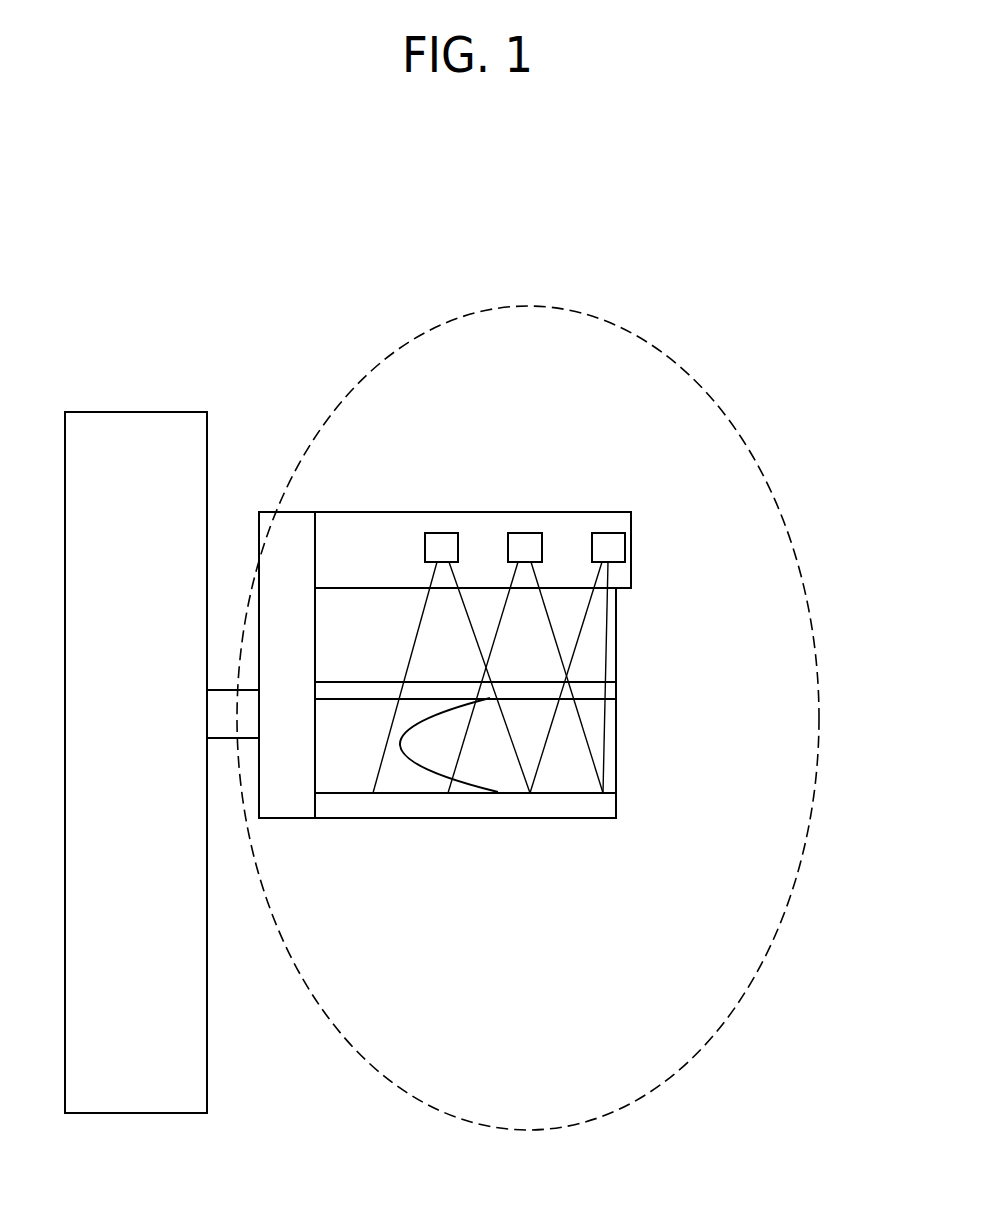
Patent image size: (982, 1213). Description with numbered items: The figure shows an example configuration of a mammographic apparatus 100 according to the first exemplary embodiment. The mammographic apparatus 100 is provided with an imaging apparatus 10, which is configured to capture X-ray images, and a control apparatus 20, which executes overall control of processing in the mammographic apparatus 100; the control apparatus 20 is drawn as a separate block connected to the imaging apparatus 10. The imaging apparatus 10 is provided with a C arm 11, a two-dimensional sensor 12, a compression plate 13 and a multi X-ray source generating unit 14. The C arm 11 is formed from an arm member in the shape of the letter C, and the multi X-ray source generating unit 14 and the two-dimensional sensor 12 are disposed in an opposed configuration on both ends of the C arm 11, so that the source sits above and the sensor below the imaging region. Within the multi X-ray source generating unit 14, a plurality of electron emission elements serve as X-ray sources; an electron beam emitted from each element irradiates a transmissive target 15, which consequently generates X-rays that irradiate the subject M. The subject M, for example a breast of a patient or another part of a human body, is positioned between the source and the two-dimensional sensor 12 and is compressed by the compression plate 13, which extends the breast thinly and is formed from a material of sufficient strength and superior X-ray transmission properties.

The mammographic apparatus 100 is at (748, 193).
The imaging apparatus 10 is at (710, 397).
The control apparatus 20 is at (138, 412).
The C arm 11 is at (289, 819).
The two-dimensional sensor 12 is at (600, 807).
The compression plate 13 is at (605, 690).
The multi X-ray source generating unit 14 is at (620, 578).
The transmissive target 15 is at (613, 546).
The subject M is at (600, 738).